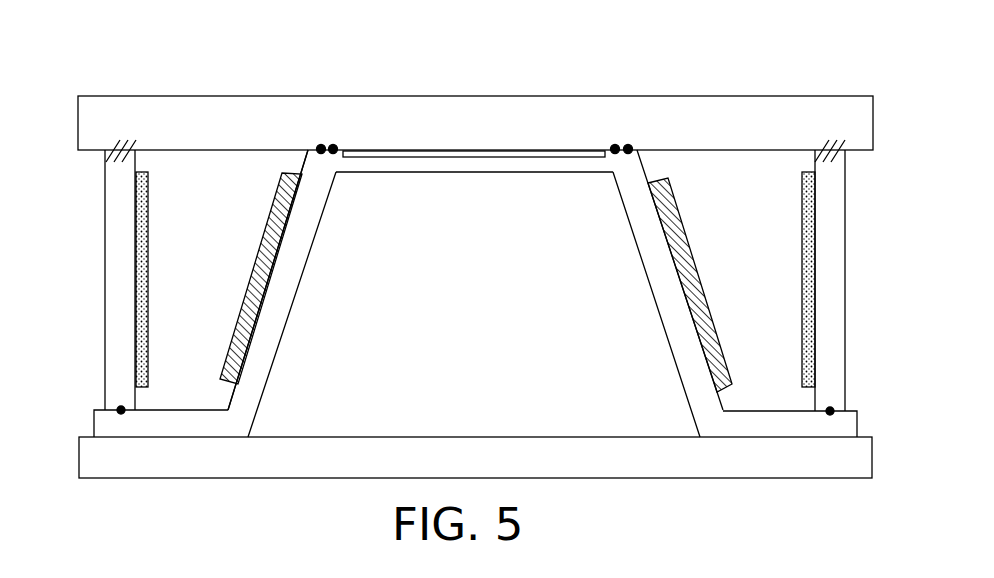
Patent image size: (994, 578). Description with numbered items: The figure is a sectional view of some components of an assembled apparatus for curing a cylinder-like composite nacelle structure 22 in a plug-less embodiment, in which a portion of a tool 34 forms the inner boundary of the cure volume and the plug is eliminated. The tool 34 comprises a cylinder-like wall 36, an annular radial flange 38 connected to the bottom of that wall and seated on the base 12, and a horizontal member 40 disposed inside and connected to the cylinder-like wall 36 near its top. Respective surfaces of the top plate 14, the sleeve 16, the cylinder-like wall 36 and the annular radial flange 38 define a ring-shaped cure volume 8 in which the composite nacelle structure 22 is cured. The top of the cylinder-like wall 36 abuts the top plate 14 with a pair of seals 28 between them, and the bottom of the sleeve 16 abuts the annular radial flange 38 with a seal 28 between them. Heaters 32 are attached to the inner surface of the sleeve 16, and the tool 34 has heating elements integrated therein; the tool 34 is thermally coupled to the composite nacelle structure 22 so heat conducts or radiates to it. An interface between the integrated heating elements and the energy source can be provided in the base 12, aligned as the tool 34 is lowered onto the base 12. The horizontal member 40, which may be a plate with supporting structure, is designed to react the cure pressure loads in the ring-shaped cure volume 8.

The ring-shaped cure volume 8 is at (210, 170).
The base 12 is at (588, 478).
The top plate 14 is at (790, 97).
The sleeve 16 is at (105, 292).
The composite nacelle structure 22 is at (262, 246).
The seal 28 is at (333, 144).
The heater 32 is at (135, 280).
The tool 34 is at (311, 299).
The cylinder-like wall 36 is at (290, 322).
The annular radial flange 38 is at (160, 409).
The horizontal member 40 is at (463, 172).